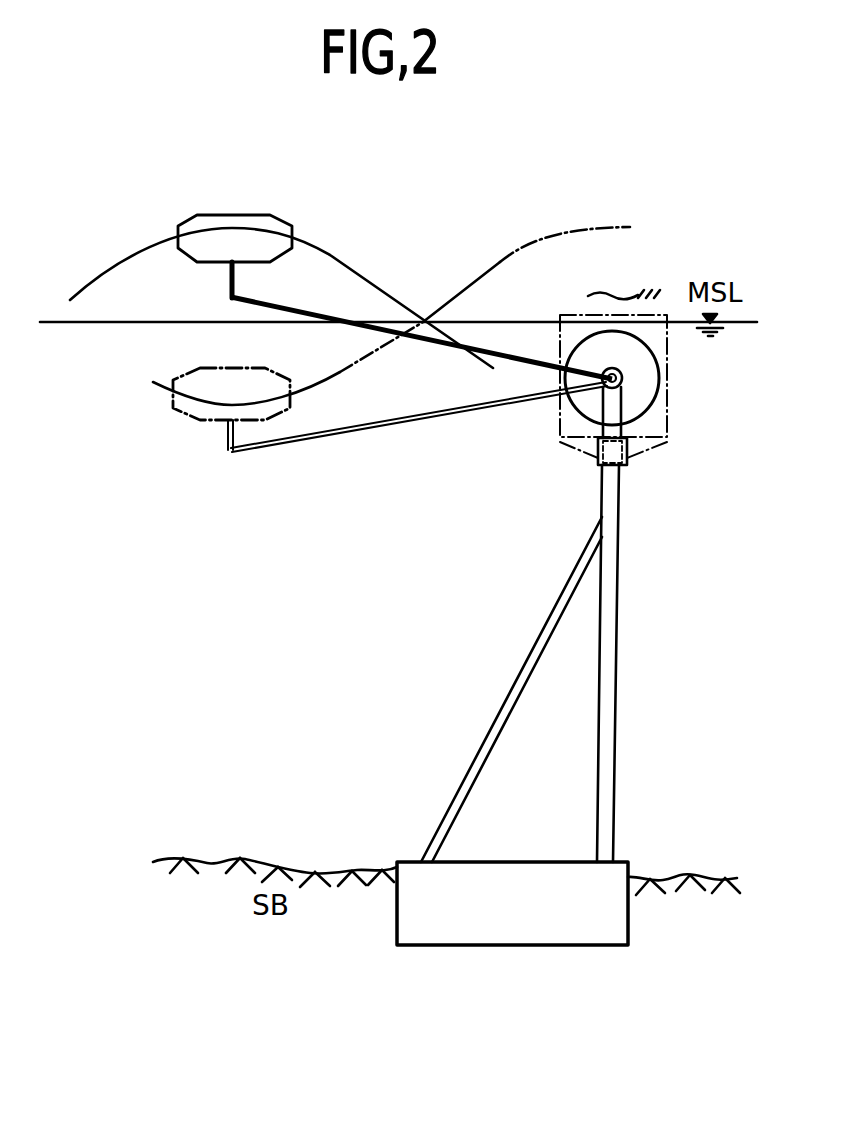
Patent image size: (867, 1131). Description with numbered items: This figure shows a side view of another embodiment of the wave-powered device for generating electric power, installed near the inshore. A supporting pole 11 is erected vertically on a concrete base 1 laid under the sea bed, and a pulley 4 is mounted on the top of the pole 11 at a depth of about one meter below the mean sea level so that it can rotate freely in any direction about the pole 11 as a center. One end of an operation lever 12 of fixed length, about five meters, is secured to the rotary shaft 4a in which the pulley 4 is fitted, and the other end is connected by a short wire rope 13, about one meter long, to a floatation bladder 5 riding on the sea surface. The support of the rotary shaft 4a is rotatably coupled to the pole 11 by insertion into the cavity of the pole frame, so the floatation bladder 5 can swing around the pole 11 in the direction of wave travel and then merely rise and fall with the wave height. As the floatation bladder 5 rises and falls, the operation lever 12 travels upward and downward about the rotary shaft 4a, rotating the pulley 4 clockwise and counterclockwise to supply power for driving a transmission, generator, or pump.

The concrete base 1 is at (438, 937).
The pulley 4 is at (638, 412).
The rotary shaft 4a is at (621, 379).
The floatation bladder 5 is at (228, 215).
The supporting pole 11 is at (610, 606).
The operation lever 12 is at (335, 315).
The wire rope 13 is at (237, 277).